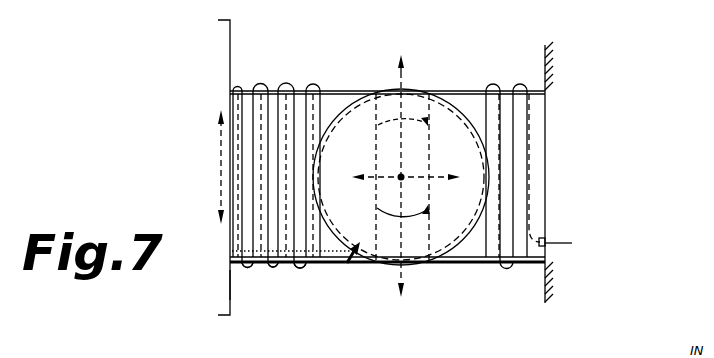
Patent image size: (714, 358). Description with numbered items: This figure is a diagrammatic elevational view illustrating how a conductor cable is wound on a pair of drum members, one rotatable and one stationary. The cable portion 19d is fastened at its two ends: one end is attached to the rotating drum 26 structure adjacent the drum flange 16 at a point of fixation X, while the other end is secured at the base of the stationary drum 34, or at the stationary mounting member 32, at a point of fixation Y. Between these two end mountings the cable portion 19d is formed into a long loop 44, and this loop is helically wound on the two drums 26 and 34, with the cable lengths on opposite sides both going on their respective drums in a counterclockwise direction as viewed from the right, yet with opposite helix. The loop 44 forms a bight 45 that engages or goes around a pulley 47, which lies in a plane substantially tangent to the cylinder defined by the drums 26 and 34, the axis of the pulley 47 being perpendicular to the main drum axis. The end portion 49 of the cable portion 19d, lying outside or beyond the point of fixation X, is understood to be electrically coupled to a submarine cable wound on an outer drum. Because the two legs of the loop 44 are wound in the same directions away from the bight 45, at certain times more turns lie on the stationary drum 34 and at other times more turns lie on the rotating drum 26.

The drum flange 16 is at (230, 74).
The cable portion 19d is at (322, 88).
The rotating drum 26 is at (318, 267).
The stationary mounting member 32 is at (543, 287).
The stationary drum 34 is at (485, 262).
The loop 44 is at (312, 82).
The bight 45 is at (352, 262).
The pulley 47 is at (417, 92).
The end portion 49 is at (234, 287).
The point of fixation X is at (230, 165).
The point of fixation Y is at (548, 240).